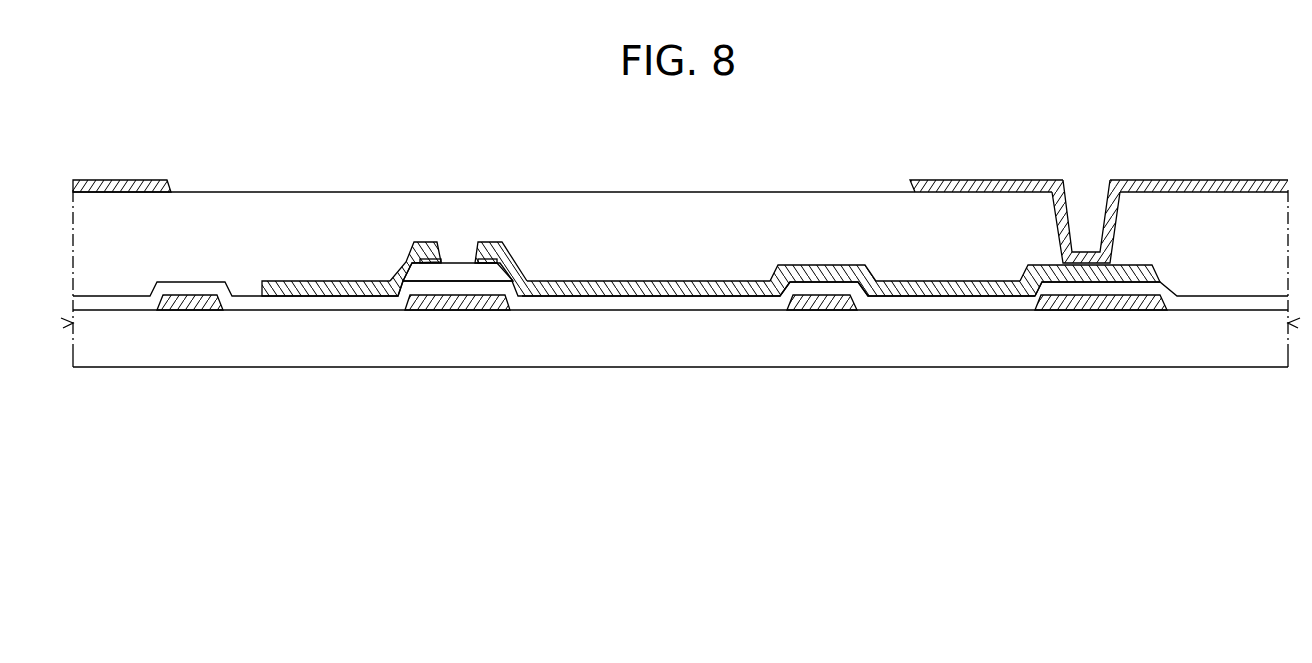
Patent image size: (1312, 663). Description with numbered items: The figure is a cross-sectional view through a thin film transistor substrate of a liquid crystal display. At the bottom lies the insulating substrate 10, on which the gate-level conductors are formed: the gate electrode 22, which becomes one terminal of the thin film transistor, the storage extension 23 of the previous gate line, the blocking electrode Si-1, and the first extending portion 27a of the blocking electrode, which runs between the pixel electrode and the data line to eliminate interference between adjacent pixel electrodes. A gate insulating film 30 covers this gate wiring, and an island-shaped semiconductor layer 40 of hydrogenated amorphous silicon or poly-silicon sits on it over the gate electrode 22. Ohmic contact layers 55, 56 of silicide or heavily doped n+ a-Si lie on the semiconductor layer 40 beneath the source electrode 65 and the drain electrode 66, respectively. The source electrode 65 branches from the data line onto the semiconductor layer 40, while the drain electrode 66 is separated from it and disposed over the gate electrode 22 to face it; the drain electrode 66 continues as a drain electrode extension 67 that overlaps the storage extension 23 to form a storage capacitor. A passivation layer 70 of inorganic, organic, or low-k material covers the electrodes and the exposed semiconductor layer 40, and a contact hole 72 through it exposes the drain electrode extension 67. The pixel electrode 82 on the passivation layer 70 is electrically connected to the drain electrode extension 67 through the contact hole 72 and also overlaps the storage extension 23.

The insulating substrate 10 is at (620, 348).
The gate electrode 22 is at (455, 308).
The storage extension 23 is at (1097, 312).
The first extending portion 27a is at (193, 310).
The gate insulating film 30 is at (334, 299).
The semiconductor layer 40 is at (434, 268).
The ohmic contact layer 55 is at (421, 263).
The ohmic contact layer 56 is at (479, 265).
The source electrode 65 is at (423, 240).
The drain electrode 66 is at (485, 240).
The drain electrode extension 67 is at (1055, 312).
The passivation layer 70 is at (687, 245).
The contact hole 72 is at (1092, 178).
The pixel electrode 82 is at (113, 190).
The blocking electrode Si-1 is at (820, 312).